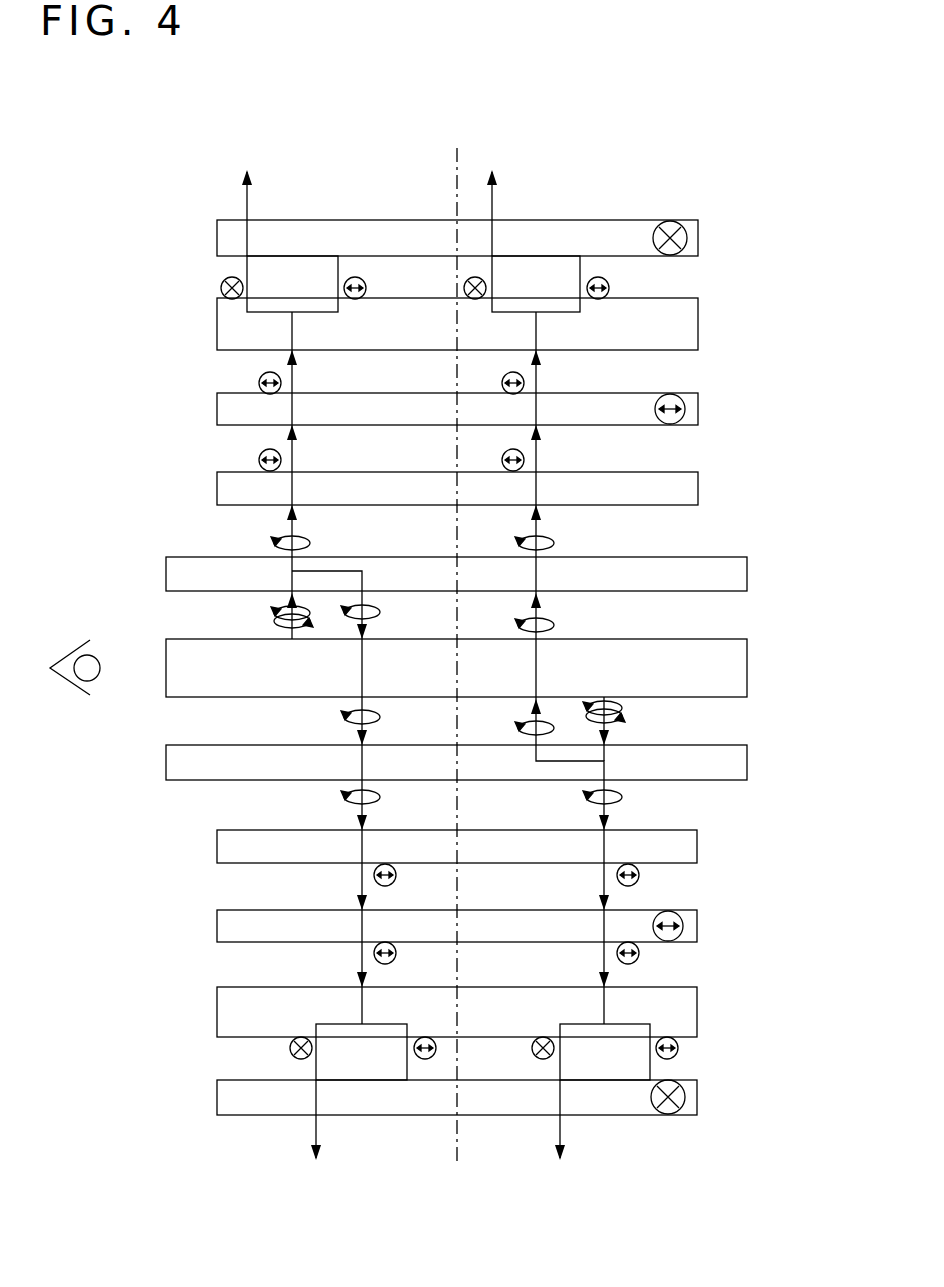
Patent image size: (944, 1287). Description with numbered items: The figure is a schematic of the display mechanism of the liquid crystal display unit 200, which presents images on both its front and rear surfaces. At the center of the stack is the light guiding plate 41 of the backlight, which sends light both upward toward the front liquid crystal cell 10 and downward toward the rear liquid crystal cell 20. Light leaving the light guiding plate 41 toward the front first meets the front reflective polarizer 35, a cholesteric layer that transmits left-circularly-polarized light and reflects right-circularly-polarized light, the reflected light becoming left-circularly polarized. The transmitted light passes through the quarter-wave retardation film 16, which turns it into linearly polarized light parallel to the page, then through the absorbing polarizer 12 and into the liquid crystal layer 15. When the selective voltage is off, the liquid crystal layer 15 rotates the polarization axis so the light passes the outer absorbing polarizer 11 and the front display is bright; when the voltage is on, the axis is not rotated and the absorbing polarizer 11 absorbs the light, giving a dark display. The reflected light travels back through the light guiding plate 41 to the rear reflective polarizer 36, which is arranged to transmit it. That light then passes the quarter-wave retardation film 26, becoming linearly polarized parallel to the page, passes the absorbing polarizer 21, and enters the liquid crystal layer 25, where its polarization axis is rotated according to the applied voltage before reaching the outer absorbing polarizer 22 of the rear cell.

The liquid crystal display unit 200 is at (705, 163).
The liquid crystal cell 10 is at (797, 223).
The absorbing polarizer 11 is at (698, 238).
The liquid crystal layer 15 is at (698, 327).
The absorbing polarizer 12 is at (698, 414).
The λ/4 retardation film 16 is at (698, 494).
The reflective polarizer 35 is at (747, 575).
The light guiding plate 41 is at (747, 668).
The reflective polarizer 36 is at (747, 762).
The liquid crystal cell 20 is at (793, 830).
The λ/4 retardation film 26 is at (697, 845).
The absorbing polarizer 21 is at (697, 927).
The liquid crystal layer 25 is at (697, 1012).
The absorbing polarizer 22 is at (697, 1097).